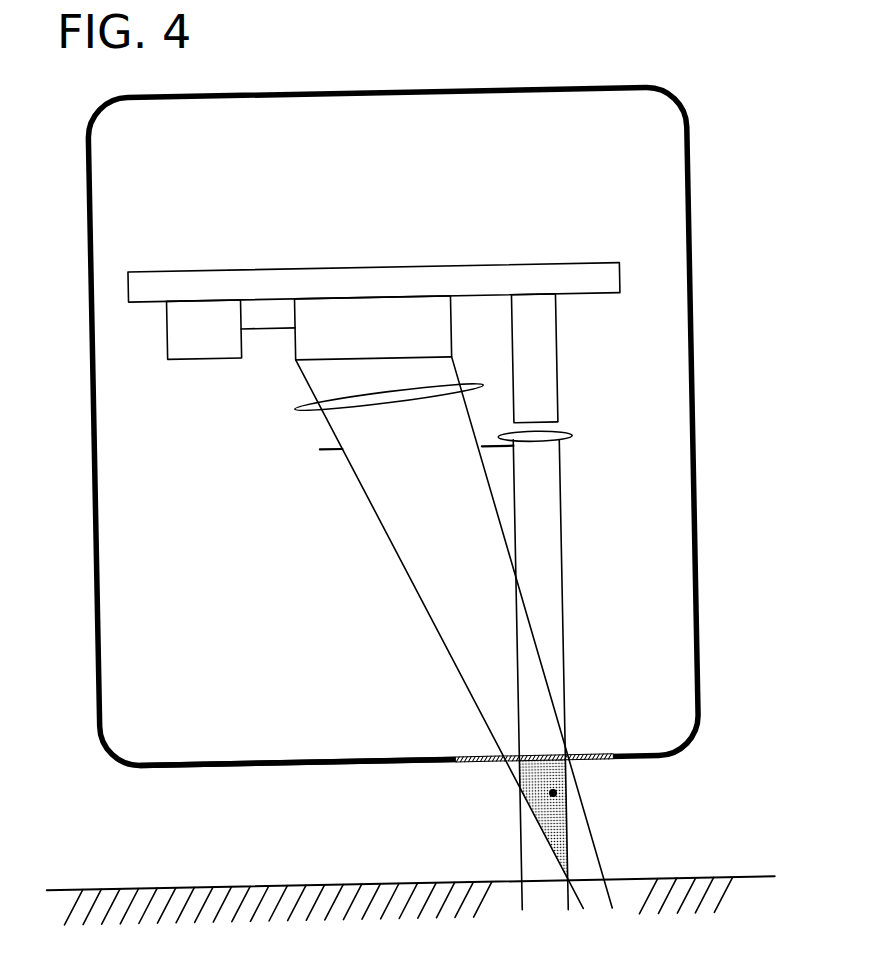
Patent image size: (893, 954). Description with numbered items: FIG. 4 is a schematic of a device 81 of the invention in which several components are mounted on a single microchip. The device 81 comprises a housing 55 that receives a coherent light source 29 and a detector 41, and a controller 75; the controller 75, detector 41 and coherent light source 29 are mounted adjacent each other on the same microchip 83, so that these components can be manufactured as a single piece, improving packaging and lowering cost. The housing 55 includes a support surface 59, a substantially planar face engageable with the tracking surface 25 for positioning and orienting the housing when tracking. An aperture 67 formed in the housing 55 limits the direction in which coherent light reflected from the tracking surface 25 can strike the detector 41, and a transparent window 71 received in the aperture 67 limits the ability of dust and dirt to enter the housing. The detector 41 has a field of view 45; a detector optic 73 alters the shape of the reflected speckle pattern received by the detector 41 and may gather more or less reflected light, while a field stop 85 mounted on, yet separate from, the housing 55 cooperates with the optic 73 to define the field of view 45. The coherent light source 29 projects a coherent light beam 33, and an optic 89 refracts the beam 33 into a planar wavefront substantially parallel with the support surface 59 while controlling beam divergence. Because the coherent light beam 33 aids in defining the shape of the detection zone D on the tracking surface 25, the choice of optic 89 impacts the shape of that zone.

The device 81 is at (405, 39).
The housing 55 is at (535, 90).
The support surface 59 is at (214, 766).
The aperture 67 is at (453, 757).
The transparent window 71 is at (478, 764).
The microchip 83 is at (498, 283).
The controller 75 is at (231, 329).
The detector 41 is at (373, 328).
The coherent light source 29 is at (560, 387).
The detector optic 73 is at (297, 406).
The optic 89 is at (573, 440).
The field stop 85 is at (325, 447).
The field of view 45 is at (498, 522).
The coherent light beam 33 is at (561, 583).
The detection zone D is at (549, 795).
The tracking surface 25 is at (711, 883).